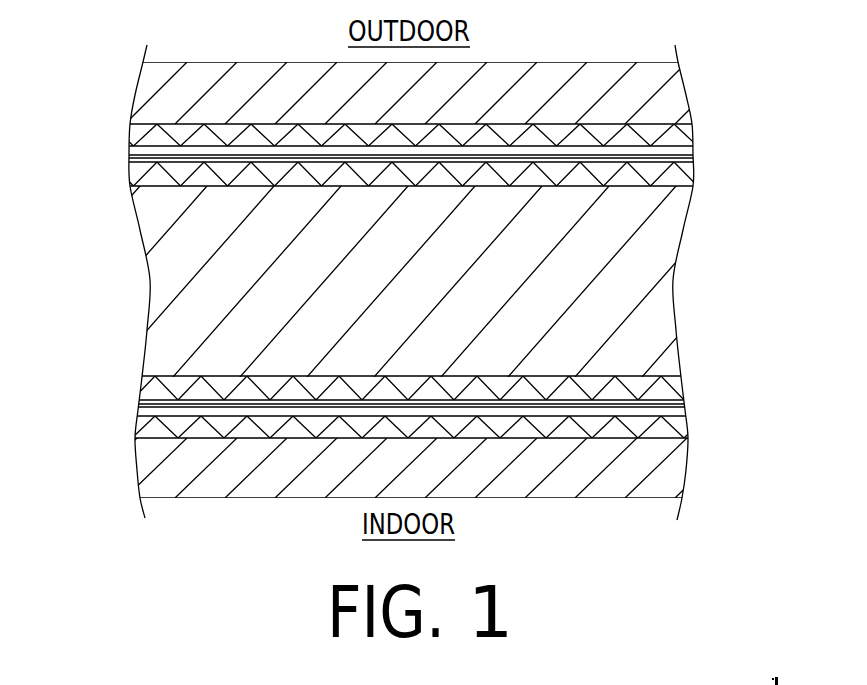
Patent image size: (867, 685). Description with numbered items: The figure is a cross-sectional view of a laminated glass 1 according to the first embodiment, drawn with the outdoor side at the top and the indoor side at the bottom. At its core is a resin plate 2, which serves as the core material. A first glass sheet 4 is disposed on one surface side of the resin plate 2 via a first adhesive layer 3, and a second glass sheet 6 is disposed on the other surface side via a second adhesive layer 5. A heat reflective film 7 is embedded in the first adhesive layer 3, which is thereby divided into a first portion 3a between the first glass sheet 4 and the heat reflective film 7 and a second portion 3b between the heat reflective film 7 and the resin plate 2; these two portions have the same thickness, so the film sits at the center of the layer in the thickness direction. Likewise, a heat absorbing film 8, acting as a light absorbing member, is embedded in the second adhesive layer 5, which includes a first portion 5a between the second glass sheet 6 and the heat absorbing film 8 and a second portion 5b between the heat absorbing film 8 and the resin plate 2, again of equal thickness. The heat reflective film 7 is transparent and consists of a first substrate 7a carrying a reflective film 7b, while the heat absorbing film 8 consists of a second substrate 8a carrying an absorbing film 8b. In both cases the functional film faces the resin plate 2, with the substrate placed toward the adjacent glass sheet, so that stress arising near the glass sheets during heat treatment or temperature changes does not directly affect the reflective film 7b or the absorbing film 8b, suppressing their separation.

The laminated glass 1 is at (728, 63).
The resin plate 2 is at (647, 268).
The first adhesive layer 3 is at (454, 155).
The first portion 3a is at (682, 133).
The second portion 3b is at (683, 173).
The first glass sheet 4 is at (555, 75).
The second adhesive layer 5 is at (454, 409).
The first portion 5a is at (672, 425).
The second portion 5b is at (672, 385).
The second glass sheet 6 is at (552, 490).
The heat reflective film 7 is at (369, 158).
The first substrate 7a is at (130, 150).
The reflective film 7b is at (130, 157).
The heat absorbing film 8 is at (370, 410).
The second substrate 8a is at (137, 410).
The absorbing film 8b is at (137, 402).